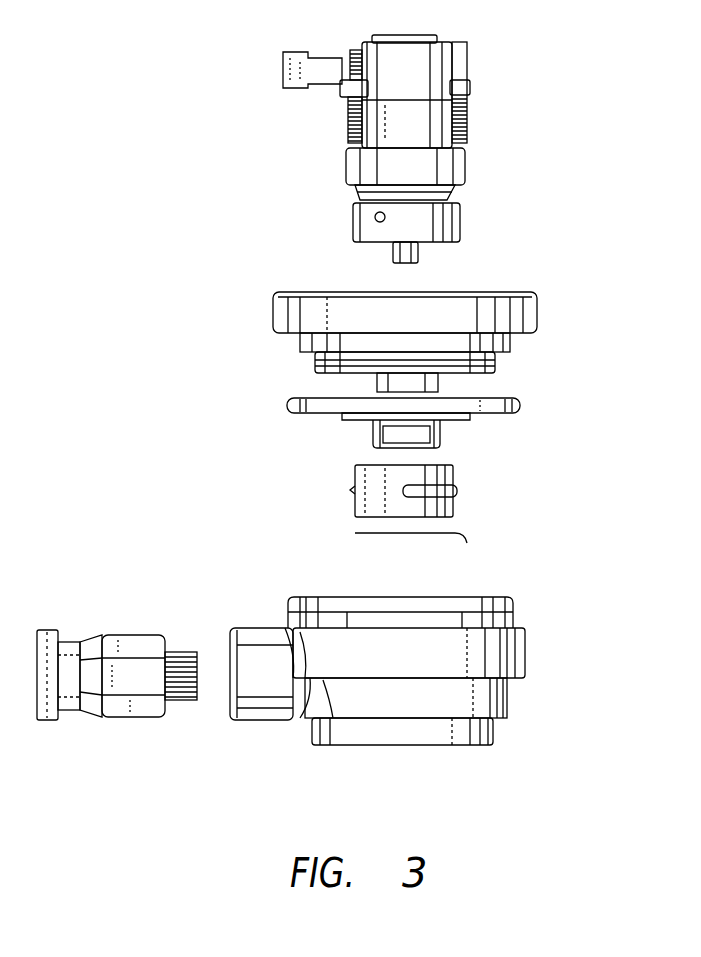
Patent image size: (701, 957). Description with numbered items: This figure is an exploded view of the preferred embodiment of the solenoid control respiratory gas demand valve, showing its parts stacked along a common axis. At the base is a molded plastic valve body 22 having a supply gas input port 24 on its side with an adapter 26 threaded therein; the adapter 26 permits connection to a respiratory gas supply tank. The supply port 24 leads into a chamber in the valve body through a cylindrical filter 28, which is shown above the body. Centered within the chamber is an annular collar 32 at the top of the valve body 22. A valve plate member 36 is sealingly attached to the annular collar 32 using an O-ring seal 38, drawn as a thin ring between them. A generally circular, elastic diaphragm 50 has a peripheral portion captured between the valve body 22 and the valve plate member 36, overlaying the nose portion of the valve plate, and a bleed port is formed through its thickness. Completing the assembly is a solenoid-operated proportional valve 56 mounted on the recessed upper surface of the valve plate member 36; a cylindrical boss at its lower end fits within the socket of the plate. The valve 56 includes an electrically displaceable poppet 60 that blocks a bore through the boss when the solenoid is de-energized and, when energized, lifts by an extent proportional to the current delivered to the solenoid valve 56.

The valve body 22 is at (495, 735).
The supply gas input port 24 is at (243, 630).
The adapter 26 is at (108, 633).
The cylindrical filter 28 is at (455, 500).
The annular collar 32 is at (520, 618).
The valve plate member 36 is at (540, 313).
The O-ring seal 38 is at (522, 406).
The elastic diaphragm 50 is at (440, 437).
The solenoid-operated proportional valve 56 is at (455, 45).
The poppet 60 is at (420, 255).